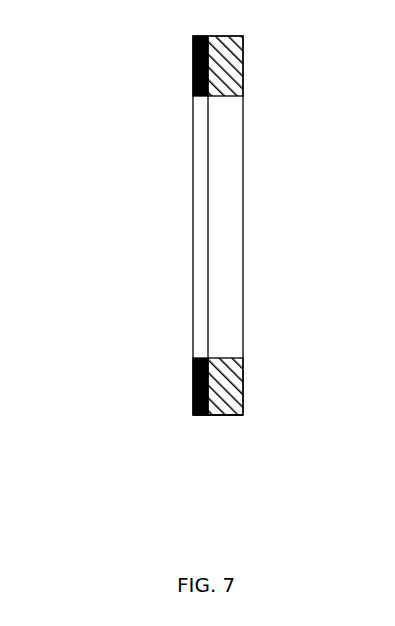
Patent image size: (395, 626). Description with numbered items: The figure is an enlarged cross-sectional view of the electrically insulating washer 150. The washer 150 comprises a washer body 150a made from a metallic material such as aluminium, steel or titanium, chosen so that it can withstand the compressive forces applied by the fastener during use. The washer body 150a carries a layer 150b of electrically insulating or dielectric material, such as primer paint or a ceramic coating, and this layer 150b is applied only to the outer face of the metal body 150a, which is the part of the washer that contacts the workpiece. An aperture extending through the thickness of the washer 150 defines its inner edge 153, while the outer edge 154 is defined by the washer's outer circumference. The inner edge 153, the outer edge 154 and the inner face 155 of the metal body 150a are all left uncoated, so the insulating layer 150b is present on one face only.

The electrically insulating washer 150 is at (150, 257).
The washer body 150a is at (228, 141).
The layer of electrically insulating material 150b is at (193, 398).
The inner edge 153 is at (213, 365).
The outer edge 154 is at (235, 415).
The inner face 155 is at (244, 388).